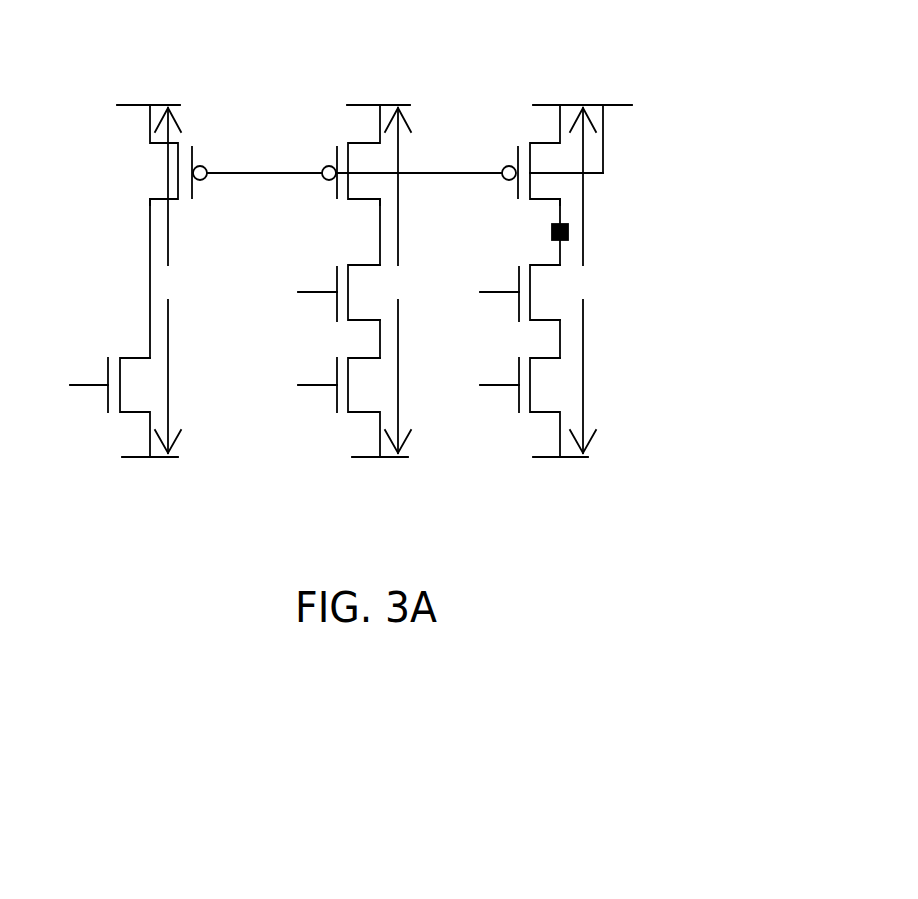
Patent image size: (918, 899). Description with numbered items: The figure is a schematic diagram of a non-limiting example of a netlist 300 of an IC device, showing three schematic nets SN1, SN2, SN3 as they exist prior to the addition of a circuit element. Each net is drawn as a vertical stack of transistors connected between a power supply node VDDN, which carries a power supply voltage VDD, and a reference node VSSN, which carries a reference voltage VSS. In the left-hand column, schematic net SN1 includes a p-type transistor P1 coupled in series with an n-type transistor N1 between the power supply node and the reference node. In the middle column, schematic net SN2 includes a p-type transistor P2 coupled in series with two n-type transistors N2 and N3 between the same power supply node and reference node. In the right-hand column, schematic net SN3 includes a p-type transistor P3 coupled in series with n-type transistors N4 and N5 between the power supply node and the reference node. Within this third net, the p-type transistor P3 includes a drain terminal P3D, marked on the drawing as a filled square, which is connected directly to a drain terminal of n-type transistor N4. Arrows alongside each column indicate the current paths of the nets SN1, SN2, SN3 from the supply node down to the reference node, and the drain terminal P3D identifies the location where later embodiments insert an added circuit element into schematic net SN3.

The netlist 300 is at (770, 35).
The p-type transistor P1 is at (191, 159).
The p-type transistor P2 is at (339, 160).
The p-type transistor P3 is at (516, 156).
The drain terminal P3D is at (530, 232).
The n-type transistor N1 is at (106, 407).
The n-type transistor N2 is at (336, 303).
The n-type transistor N3 is at (336, 407).
The n-type transistor N4 is at (516, 303).
The n-type transistor N5 is at (516, 407).
The schematic net SN1 is at (182, 280).
The schematic net SN2 is at (413, 280).
The schematic net SN3 is at (597, 280).